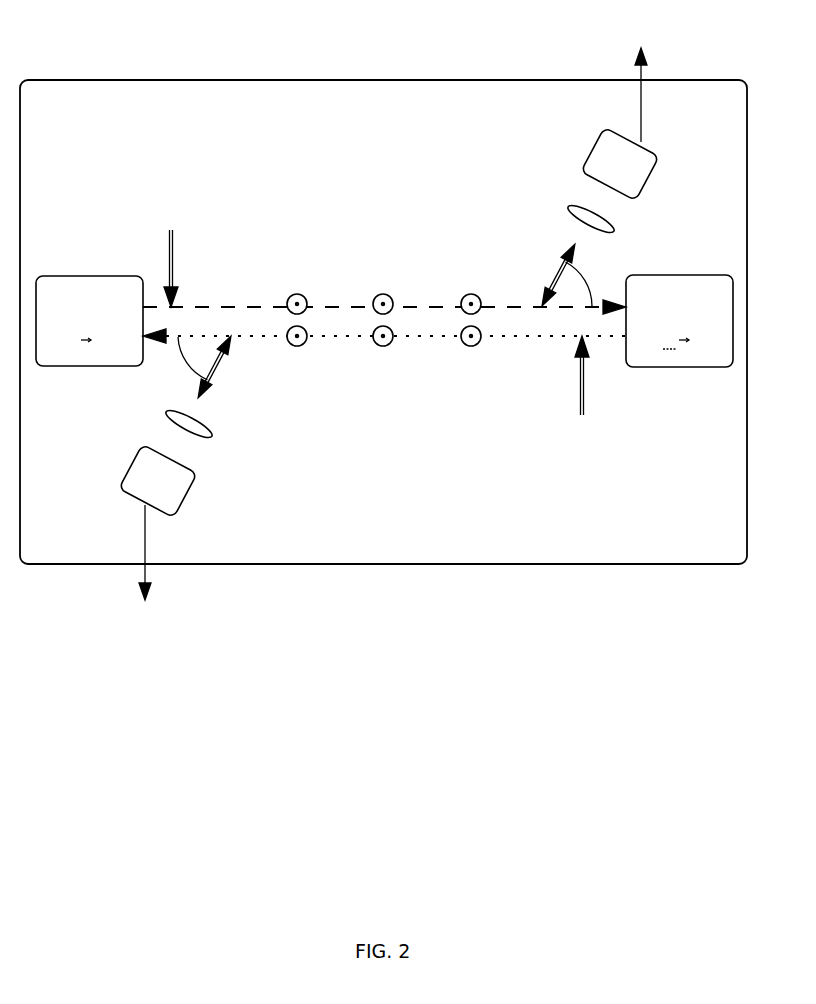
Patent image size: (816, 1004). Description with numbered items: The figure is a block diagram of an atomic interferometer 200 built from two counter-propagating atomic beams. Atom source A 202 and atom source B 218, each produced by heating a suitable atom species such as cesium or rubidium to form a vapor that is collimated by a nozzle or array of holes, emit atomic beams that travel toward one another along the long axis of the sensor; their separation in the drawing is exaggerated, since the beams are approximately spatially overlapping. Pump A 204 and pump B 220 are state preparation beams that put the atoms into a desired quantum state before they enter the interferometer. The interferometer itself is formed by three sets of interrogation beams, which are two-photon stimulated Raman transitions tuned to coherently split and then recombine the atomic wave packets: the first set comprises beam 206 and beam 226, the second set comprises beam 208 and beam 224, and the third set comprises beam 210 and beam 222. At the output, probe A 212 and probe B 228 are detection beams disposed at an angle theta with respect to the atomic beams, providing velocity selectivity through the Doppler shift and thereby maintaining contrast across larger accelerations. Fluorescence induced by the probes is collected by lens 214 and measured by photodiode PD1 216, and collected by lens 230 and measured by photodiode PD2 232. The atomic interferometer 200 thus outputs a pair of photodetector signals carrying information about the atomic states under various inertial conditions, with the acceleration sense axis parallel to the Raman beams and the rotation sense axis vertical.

The atomic interferometer 200 is at (383, 290).
The atom source A 202 is at (88, 290).
The pump A 204 is at (154, 228).
The beam 206 is at (276, 255).
The beam 208 is at (366, 255).
The beam 210 is at (453, 255).
The probe A 212 is at (545, 245).
The lens 214 is at (568, 192).
The PD1 216 is at (602, 110).
The atom source B 218 is at (679, 290).
The pump B 220 is at (572, 416).
The beam 222 is at (455, 386).
The beam 224 is at (367, 386).
The beam 226 is at (280, 386).
The probe B 228 is at (179, 372).
The lens 230 is at (149, 419).
The PD2 232 is at (128, 532).